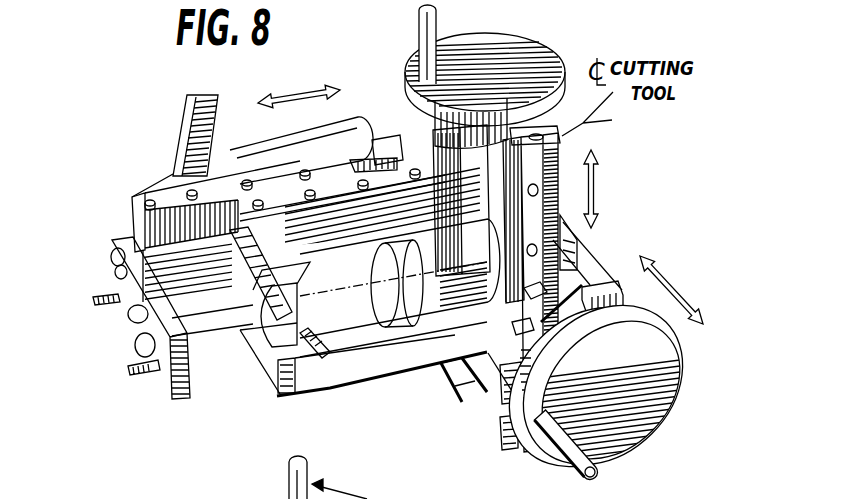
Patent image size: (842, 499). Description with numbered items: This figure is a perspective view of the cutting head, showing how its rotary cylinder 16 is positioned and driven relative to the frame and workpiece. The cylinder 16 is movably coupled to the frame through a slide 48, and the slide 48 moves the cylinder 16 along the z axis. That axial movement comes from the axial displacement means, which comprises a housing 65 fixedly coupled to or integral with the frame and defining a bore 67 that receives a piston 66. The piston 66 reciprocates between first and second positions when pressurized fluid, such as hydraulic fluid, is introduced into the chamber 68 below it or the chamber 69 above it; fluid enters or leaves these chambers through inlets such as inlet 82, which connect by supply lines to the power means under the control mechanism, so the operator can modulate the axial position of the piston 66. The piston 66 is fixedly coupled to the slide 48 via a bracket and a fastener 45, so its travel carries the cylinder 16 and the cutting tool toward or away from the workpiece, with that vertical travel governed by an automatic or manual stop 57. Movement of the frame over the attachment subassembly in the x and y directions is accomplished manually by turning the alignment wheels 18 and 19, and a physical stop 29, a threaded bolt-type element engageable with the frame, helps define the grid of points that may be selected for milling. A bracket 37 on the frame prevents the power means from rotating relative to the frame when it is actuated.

The rotary cylinder 16 is at (352, 112).
The alignment wheel 18 is at (523, 35).
The alignment wheel 19 is at (652, 424).
The physical stop 29 is at (580, 254).
The bracket 37 is at (189, 95).
The fastener 45 is at (140, 342).
The slide 48 is at (167, 382).
The stop 57 is at (118, 320).
The housing 65 is at (359, 366).
The piston 66 is at (405, 370).
The bore 67 is at (441, 335).
The chamber 68 is at (482, 375).
The chamber 69 is at (262, 355).
The inlet 82 is at (326, 363).